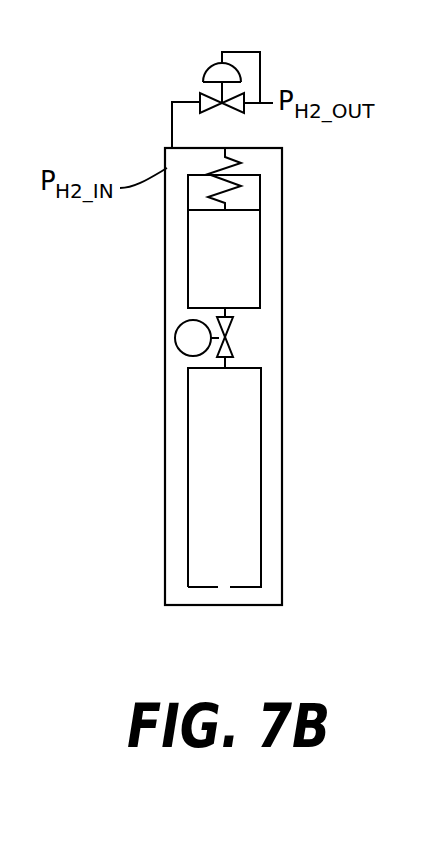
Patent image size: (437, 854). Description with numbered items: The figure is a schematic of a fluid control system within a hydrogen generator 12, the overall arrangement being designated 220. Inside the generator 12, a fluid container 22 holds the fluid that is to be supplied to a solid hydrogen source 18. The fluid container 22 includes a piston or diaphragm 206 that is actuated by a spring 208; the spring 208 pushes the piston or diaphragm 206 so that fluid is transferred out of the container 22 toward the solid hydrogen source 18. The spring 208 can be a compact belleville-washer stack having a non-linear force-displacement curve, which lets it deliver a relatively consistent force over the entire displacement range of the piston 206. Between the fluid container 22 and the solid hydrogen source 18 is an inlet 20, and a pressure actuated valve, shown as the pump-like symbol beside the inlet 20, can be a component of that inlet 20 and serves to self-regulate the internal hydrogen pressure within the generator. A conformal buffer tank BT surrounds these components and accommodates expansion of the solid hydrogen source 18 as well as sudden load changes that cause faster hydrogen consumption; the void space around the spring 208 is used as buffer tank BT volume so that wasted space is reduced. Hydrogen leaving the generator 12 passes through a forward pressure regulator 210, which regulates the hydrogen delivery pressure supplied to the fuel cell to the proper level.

The generator 12 is at (164, 295).
The conformal buffer tank BT is at (177, 472).
The solid hydrogen source 18 is at (247, 503).
The inlet 20 is at (228, 363).
The fluid container 22 is at (262, 260).
The piston or diaphragm 206 is at (250, 202).
The spring 208 is at (242, 157).
The forward pressure regulator 210 is at (254, 41).
The tank system 220 is at (117, 132).